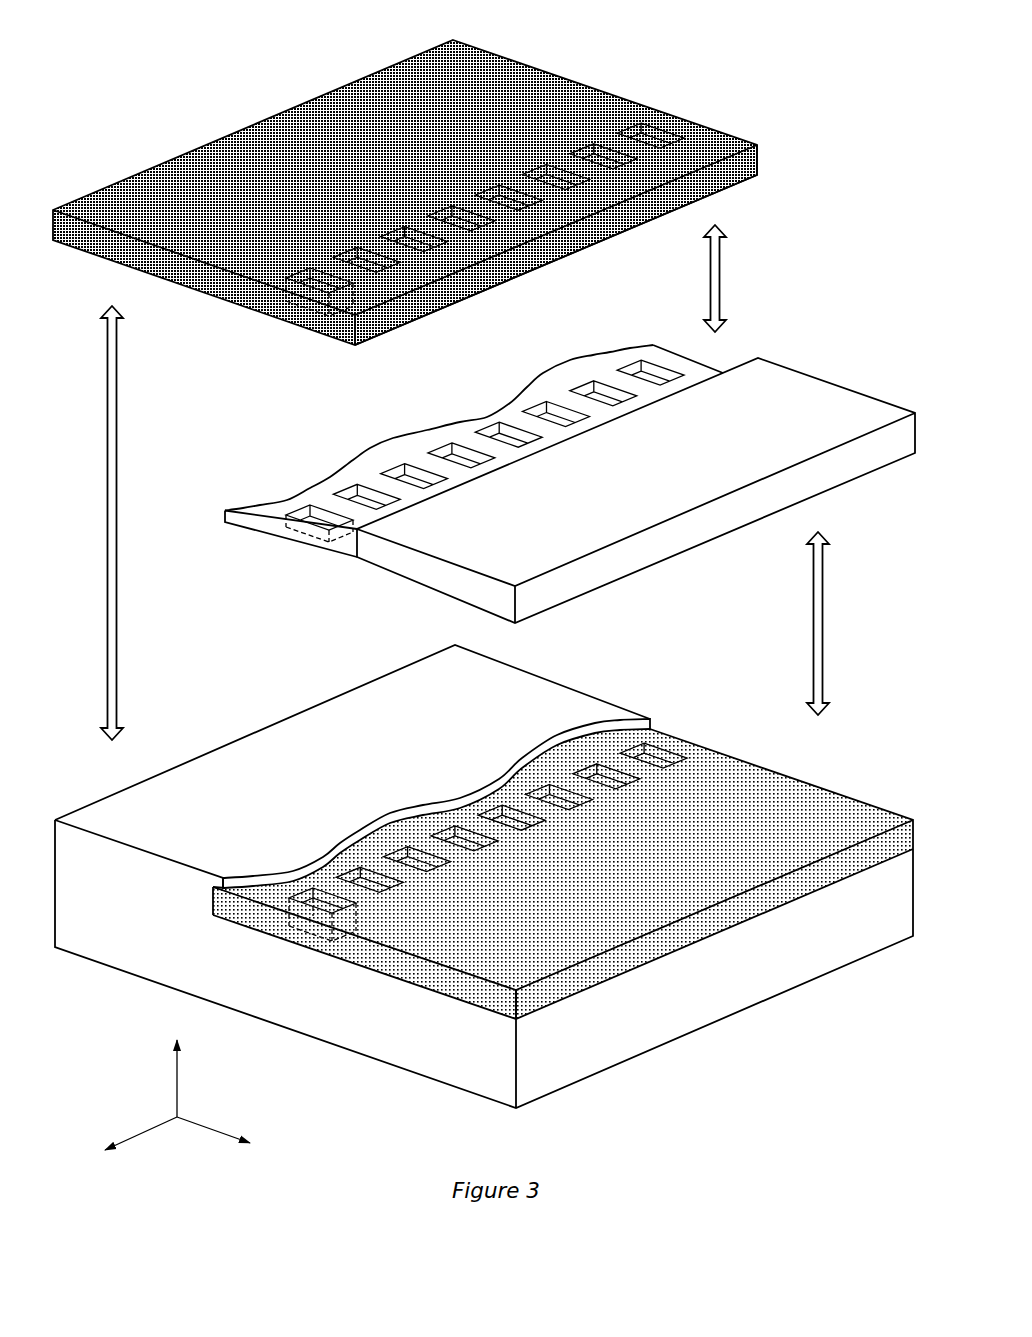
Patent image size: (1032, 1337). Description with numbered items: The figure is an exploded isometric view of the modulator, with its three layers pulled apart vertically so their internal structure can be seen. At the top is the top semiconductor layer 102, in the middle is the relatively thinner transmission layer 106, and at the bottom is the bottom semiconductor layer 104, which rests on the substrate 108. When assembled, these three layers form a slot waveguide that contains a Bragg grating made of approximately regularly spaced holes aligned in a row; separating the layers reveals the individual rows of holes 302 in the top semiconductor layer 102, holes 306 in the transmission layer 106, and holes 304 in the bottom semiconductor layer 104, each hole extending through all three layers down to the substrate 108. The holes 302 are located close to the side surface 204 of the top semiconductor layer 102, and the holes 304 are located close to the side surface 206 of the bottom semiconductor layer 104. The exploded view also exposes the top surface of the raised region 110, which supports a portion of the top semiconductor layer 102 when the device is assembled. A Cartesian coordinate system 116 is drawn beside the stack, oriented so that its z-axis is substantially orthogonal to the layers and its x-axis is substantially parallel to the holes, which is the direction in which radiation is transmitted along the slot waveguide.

The top semiconductor layer 102 is at (590, 97).
The bottom semiconductor layer 104 is at (772, 789).
The transmission layer 106 is at (687, 363).
The substrate 108 is at (665, 1025).
The raised region 110 is at (265, 755).
The Cartesian coordinate system 116 is at (230, 1090).
The side surface 204 is at (737, 167).
The side surface 206 is at (207, 893).
The holes 302 is at (695, 102).
The holes 304 is at (675, 705).
The holes 306 is at (630, 335).